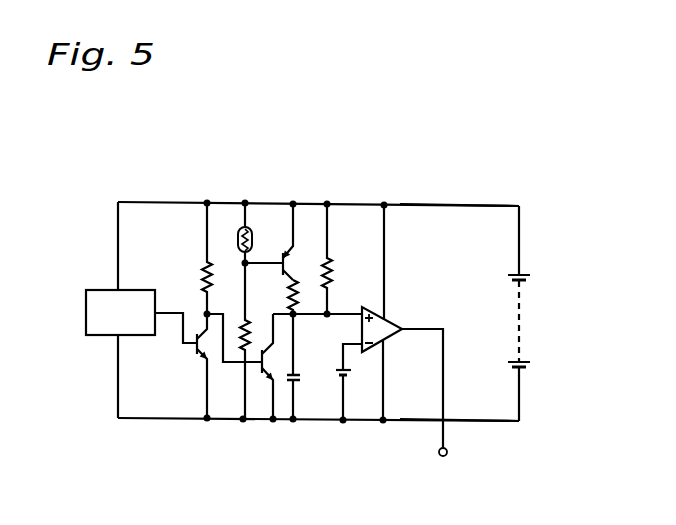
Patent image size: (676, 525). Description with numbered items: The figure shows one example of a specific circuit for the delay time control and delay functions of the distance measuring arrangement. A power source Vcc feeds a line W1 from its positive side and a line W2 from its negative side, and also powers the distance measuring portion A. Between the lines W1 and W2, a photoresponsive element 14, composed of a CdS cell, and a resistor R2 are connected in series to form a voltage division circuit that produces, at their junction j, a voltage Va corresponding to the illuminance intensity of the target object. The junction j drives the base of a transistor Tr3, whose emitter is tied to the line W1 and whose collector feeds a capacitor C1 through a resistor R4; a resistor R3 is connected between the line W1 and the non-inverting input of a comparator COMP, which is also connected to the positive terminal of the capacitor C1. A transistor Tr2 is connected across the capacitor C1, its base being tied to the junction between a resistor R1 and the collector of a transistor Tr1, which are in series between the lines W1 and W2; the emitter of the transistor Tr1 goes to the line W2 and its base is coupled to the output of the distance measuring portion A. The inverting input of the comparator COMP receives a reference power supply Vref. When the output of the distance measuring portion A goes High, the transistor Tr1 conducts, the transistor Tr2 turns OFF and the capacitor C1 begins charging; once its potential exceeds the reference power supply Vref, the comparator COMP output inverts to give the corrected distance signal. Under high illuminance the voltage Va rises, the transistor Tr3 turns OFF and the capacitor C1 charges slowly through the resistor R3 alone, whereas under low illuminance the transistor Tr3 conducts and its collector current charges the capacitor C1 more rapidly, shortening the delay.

The photoresponsive element 14 is at (238, 231).
The distance measuring portion A is at (88, 290).
The transistor Tr1 is at (196, 345).
The transistor Tr2 is at (268, 370).
The transistor Tr3 is at (291, 261).
The resistor R1 is at (204, 272).
The resistor R2 is at (245, 337).
The resistor R3 is at (329, 270).
The resistor R4 is at (291, 289).
The capacitor C1 is at (297, 370).
The junction j is at (243, 265).
The voltage Va is at (268, 262).
The comparator COMP is at (386, 318).
The reference power supply Vref is at (354, 370).
The line W1 is at (445, 204).
The line W2 is at (475, 422).
The power source Vcc is at (520, 360).